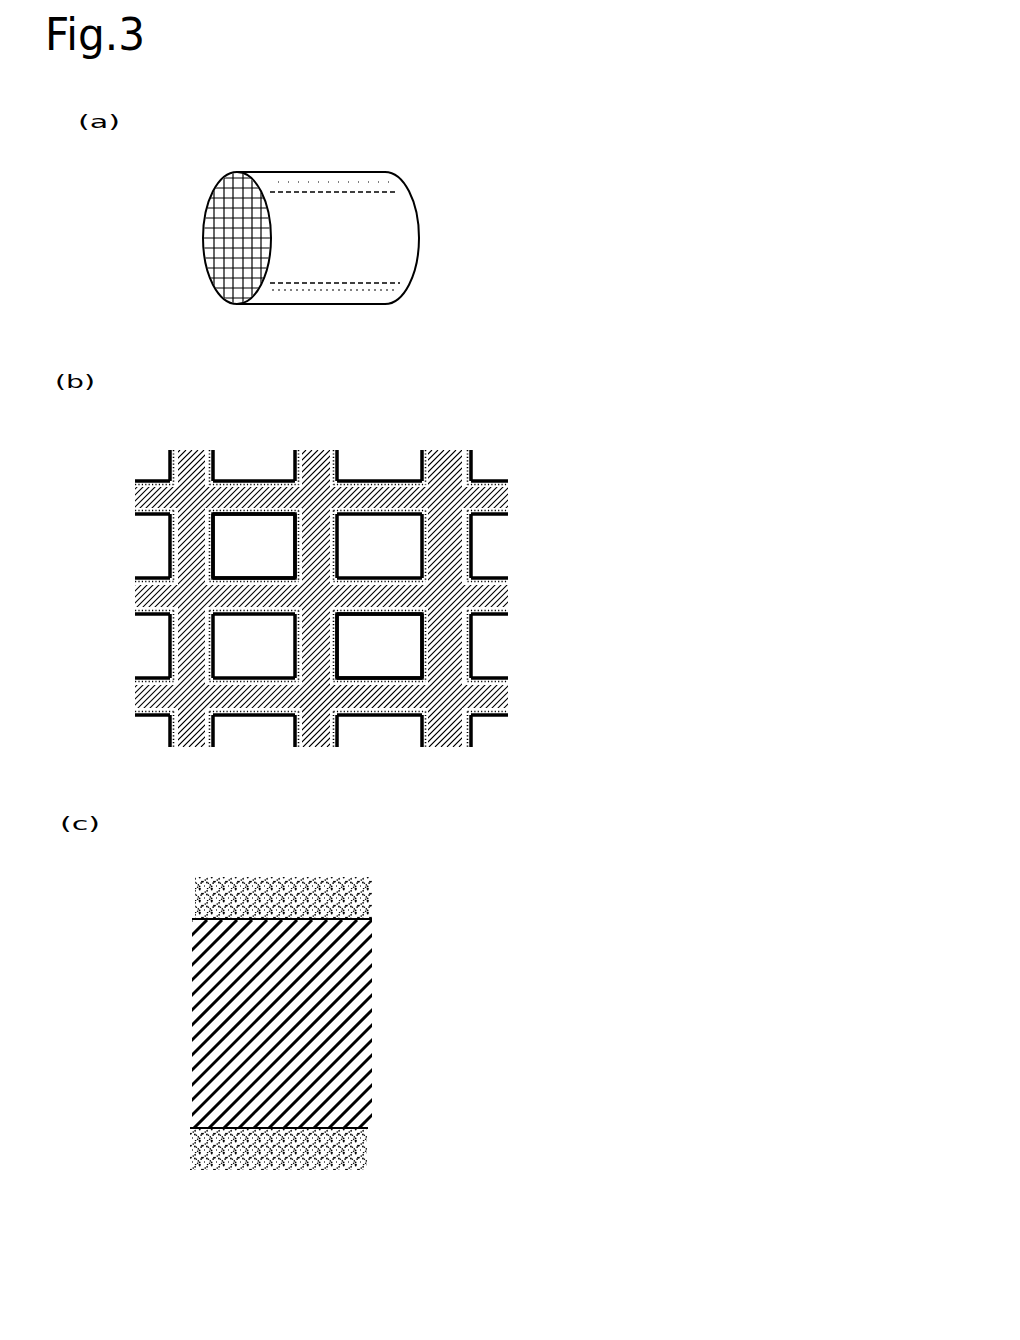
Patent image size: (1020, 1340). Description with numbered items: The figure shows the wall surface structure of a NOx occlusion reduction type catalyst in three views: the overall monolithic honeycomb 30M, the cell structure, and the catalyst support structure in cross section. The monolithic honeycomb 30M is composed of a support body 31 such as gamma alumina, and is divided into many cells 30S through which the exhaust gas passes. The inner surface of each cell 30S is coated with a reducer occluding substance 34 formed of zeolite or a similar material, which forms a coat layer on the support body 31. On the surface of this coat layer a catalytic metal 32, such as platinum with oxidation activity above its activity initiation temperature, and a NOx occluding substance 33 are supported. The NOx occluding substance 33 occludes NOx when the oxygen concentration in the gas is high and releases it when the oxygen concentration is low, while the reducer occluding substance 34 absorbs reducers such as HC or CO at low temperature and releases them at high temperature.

The monolithic honeycomb 30M is at (400, 256).
The cell 30S is at (258, 532).
The support body 31 is at (490, 497).
The catalytic metal 32 is at (480, 520).
The NOx occluding substance 33 is at (551, 683).
The reducer occluding substance 34 is at (490, 518).